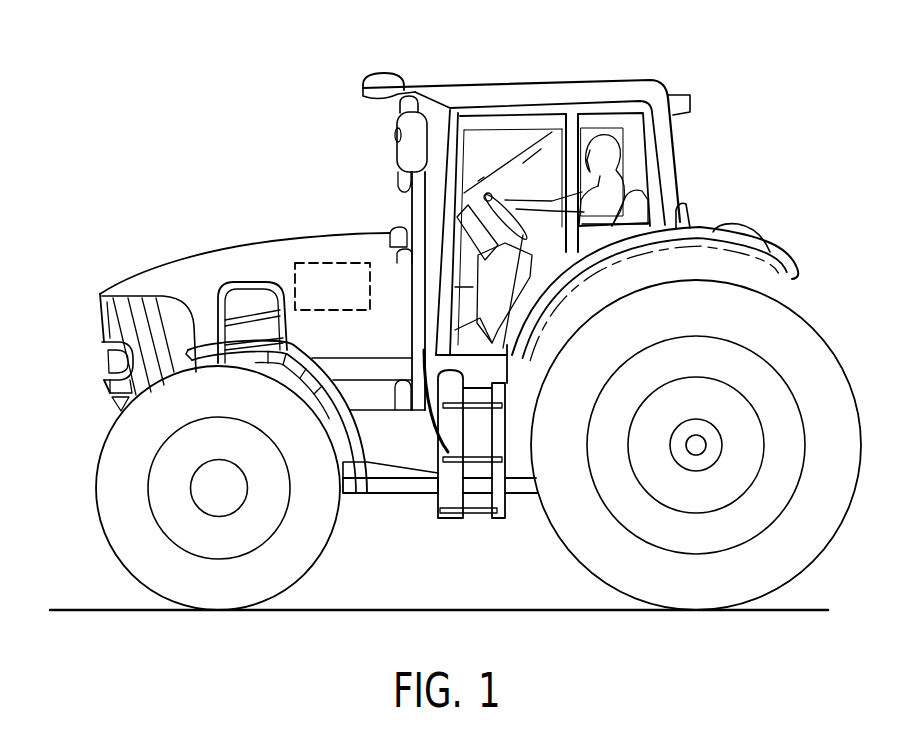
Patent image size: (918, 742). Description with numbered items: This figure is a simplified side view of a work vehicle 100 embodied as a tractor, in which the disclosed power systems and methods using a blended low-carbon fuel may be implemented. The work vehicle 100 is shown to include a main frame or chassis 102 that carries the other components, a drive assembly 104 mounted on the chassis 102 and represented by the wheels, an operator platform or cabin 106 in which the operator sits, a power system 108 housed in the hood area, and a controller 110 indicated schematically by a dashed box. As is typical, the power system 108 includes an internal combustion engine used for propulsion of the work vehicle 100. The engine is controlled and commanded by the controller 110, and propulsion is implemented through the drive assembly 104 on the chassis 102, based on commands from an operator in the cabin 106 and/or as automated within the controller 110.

The work vehicle 100 is at (690, 62).
The chassis 102 is at (350, 478).
The drive assembly 104 is at (205, 490).
The cabin 106 is at (497, 102).
The power system 108 is at (188, 280).
The controller 110 is at (332, 263).